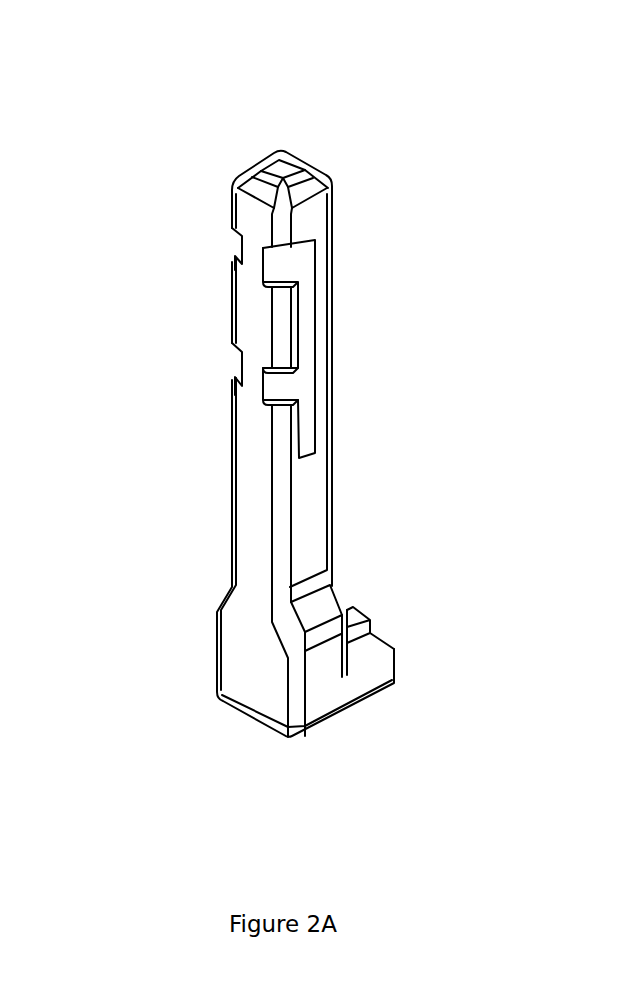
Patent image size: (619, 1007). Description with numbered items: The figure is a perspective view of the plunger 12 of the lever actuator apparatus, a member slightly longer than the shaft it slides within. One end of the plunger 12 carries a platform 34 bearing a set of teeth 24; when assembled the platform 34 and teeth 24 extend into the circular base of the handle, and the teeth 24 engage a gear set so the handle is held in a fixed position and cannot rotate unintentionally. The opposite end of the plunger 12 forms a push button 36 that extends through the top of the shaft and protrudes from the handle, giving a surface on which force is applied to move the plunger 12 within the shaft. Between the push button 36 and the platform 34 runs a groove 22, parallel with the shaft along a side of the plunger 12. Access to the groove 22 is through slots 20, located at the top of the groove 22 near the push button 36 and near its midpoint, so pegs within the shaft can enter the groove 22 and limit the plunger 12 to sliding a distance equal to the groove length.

The plunger 12 is at (233, 547).
The slots 20 is at (237, 367).
The groove 22 is at (308, 380).
The teeth 24 is at (358, 624).
The platform 34 is at (360, 657).
The push button 36 is at (283, 163).